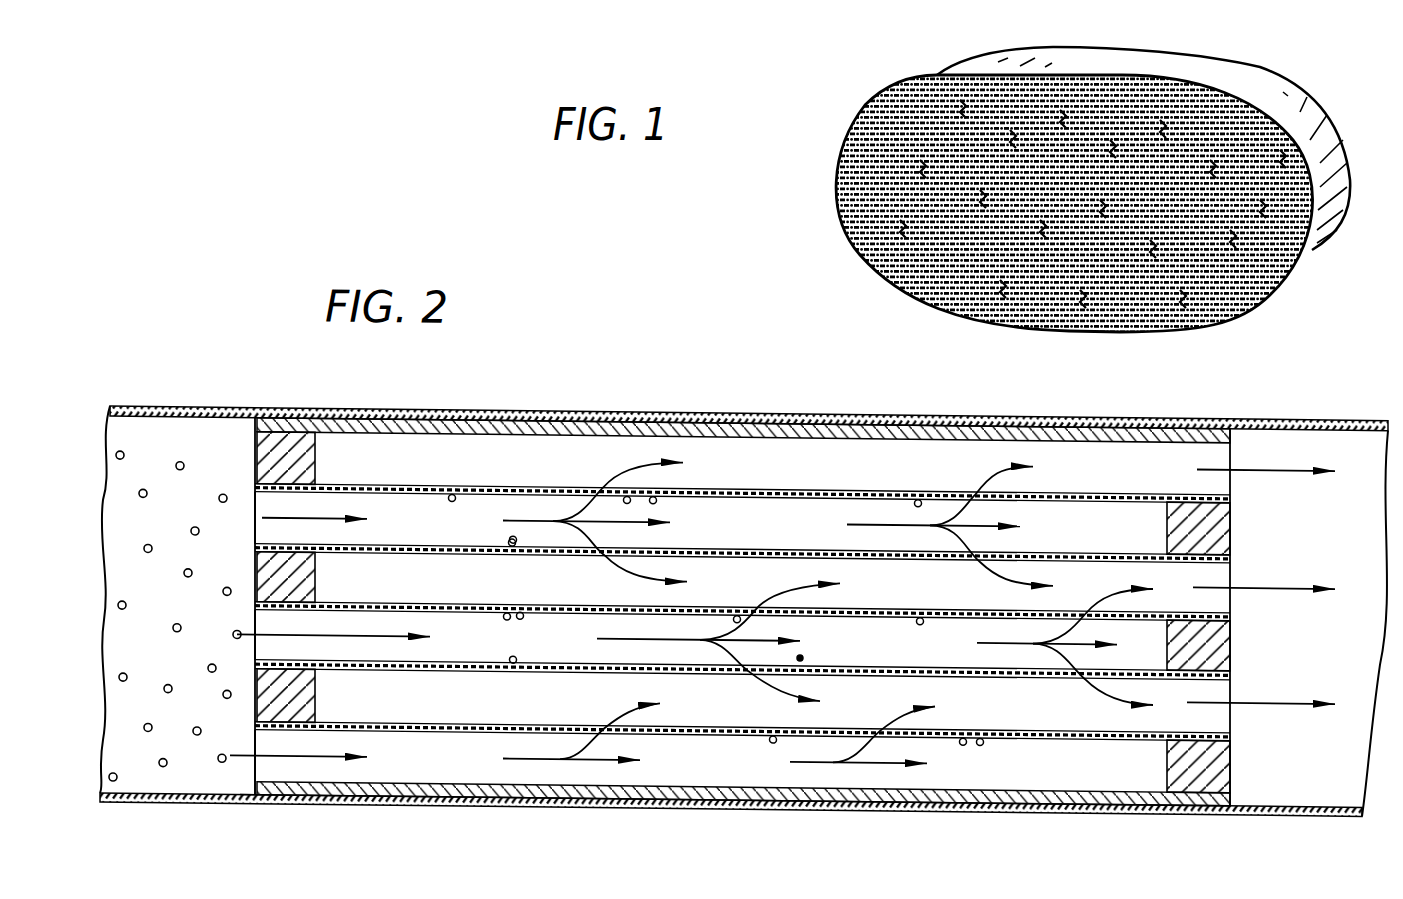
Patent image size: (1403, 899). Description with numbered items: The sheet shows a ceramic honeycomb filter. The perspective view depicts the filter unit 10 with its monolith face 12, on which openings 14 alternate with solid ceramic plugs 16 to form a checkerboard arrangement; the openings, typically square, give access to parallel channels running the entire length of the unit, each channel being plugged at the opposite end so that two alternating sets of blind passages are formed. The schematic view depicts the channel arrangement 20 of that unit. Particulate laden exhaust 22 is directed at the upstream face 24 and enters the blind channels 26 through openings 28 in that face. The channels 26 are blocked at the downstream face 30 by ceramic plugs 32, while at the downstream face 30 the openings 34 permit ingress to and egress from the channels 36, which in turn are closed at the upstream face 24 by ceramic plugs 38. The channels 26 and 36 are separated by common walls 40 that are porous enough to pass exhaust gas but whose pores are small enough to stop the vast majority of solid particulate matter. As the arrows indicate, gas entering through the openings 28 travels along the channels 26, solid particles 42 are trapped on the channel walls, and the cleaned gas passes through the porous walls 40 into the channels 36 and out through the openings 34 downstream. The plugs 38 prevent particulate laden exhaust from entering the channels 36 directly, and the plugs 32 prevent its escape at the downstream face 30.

In FIG. 1, the filter unit 10 is at (1395, 245).
In FIG. 1, the monolith face 12 is at (1226, 327).
In FIG. 1, the openings 14 is at (959, 77).
In FIG. 1, the ceramic plugs 16 is at (1122, 77).
In FIG. 2, the channel arrangement 20 is at (607, 395).
In FIG. 2, the particulate laden exhaust 22 is at (177, 487).
In FIG. 2, the upstream face 24 is at (247, 777).
In FIG. 2, the blind channels 26 is at (483, 649).
In FIG. 2, the openings 28 is at (260, 613).
In FIG. 2, the downstream face 30 is at (1232, 793).
In FIG. 2, the ceramic plugs 32 is at (1222, 522).
In FIG. 2, the openings 34 is at (1230, 458).
In FIG. 2, the channels 36 is at (857, 471).
In FIG. 2, the ceramic plugs 38 is at (320, 453).
In FIG. 2, the common walls 40 is at (775, 538).
In FIG. 2, the solid particles 42 is at (512, 533).